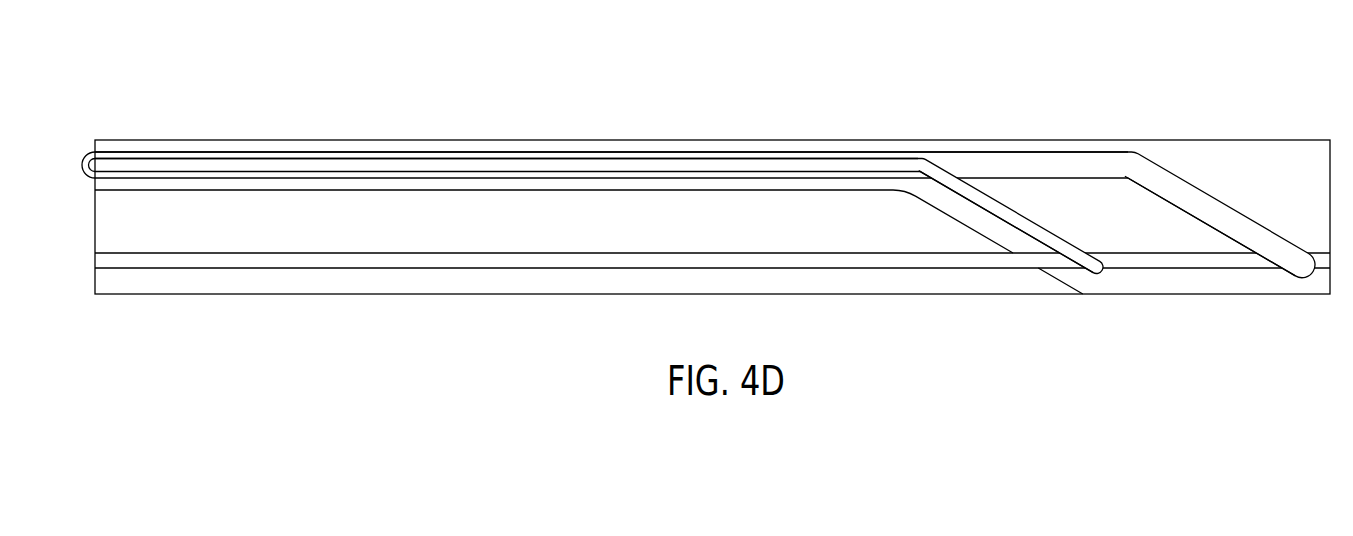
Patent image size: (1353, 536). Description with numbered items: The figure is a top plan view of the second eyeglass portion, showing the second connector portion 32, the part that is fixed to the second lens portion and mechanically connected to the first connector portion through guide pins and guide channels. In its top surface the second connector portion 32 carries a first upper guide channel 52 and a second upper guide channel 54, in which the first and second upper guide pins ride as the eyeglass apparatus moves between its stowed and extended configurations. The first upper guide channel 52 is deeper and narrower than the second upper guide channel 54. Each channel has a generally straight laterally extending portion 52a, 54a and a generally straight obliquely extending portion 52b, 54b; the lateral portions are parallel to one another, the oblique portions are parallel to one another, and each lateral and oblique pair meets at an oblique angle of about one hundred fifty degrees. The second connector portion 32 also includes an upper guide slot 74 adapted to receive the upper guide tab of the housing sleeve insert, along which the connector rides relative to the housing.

The second connector portion 32 is at (508, 140).
The first upper guide channel 52 is at (596, 209).
The laterally extending portion 52a is at (362, 167).
The obliquely extending portion 52b is at (1038, 237).
The second upper guide channel 54 is at (698, 210).
The laterally extending portion 54a is at (1077, 165).
The obliquely extending portion 54b is at (1245, 232).
The upper guide slot 74 is at (193, 260).